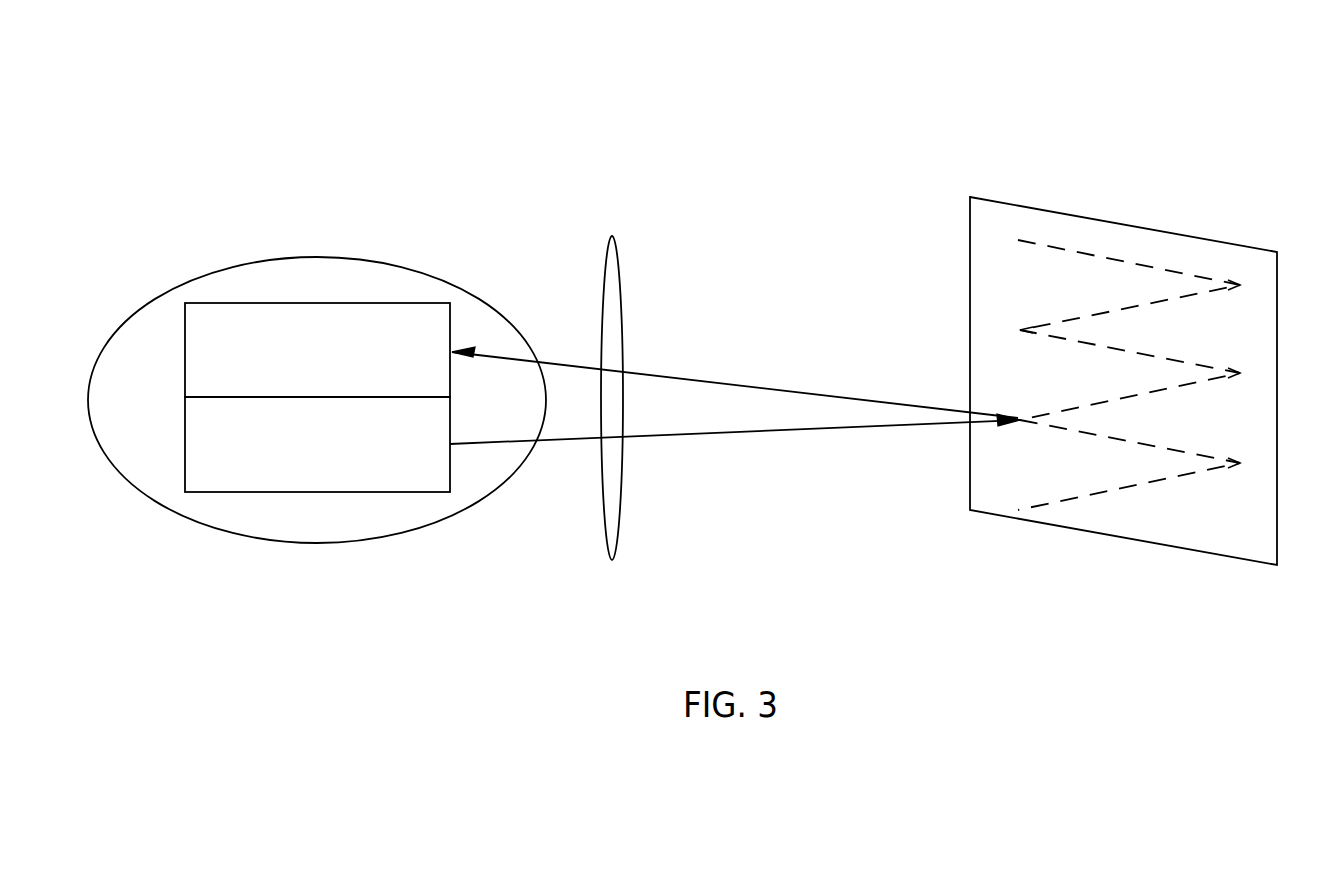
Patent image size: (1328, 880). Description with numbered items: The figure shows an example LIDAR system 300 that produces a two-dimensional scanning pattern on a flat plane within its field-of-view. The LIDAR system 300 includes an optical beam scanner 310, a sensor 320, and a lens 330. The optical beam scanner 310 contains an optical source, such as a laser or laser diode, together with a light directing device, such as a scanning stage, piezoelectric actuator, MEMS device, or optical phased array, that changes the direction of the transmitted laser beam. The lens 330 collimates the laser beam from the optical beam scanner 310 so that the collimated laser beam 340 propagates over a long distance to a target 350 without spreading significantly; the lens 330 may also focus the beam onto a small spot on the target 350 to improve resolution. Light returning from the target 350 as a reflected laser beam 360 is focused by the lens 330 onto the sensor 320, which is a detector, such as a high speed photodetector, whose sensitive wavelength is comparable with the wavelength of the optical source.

The LIDAR system 300 is at (702, 78).
The optical beam scanner 310 is at (296, 486).
The sensor 320 is at (296, 377).
The lens 330 is at (623, 250).
The collimated laser beam 340 is at (725, 433).
The target 350 is at (1257, 243).
The reflected laser beam 360 is at (710, 378).